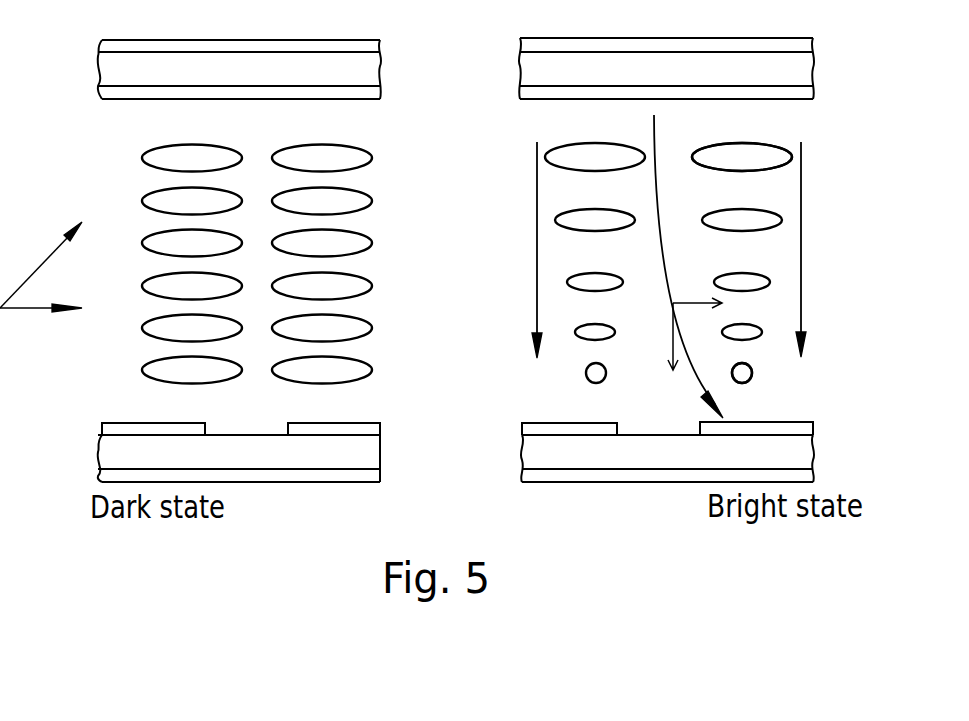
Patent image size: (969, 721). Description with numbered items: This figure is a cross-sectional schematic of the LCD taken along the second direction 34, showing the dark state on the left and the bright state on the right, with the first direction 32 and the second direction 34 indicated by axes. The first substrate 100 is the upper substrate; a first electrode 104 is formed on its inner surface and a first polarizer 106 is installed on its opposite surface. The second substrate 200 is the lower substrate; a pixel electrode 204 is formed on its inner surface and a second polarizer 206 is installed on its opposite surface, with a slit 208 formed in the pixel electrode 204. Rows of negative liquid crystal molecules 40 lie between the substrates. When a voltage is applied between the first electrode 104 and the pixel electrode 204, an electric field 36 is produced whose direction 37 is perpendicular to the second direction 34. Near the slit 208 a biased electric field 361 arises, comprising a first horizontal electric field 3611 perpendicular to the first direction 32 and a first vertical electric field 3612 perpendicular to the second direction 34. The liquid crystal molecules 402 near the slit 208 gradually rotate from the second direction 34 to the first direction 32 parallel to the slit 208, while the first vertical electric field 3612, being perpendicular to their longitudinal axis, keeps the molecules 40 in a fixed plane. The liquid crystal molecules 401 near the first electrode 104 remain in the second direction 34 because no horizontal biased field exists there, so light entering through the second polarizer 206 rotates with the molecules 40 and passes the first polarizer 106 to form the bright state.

The first substrate 100 is at (372, 69).
The first electrode 104 is at (372, 92).
The first polarizer 106 is at (372, 47).
The second substrate 200 is at (383, 450).
The pixel electrode 204 is at (383, 428).
The second polarizer 206 is at (383, 474).
The slit 208 is at (270, 428).
The liquid crystal molecules 40 is at (342, 291).
The liquid crystal molecules 401 is at (735, 155).
The liquid crystal molecules 402 is at (752, 378).
The electric field 36 is at (520, 250).
The direction 37 is at (819, 249).
The biased electric field 361 is at (710, 268).
The first horizontal electric field 3611 is at (730, 307).
The first vertical electric field 3612 is at (665, 354).
The first direction 32 is at (57, 250).
The second direction 34 is at (58, 312).